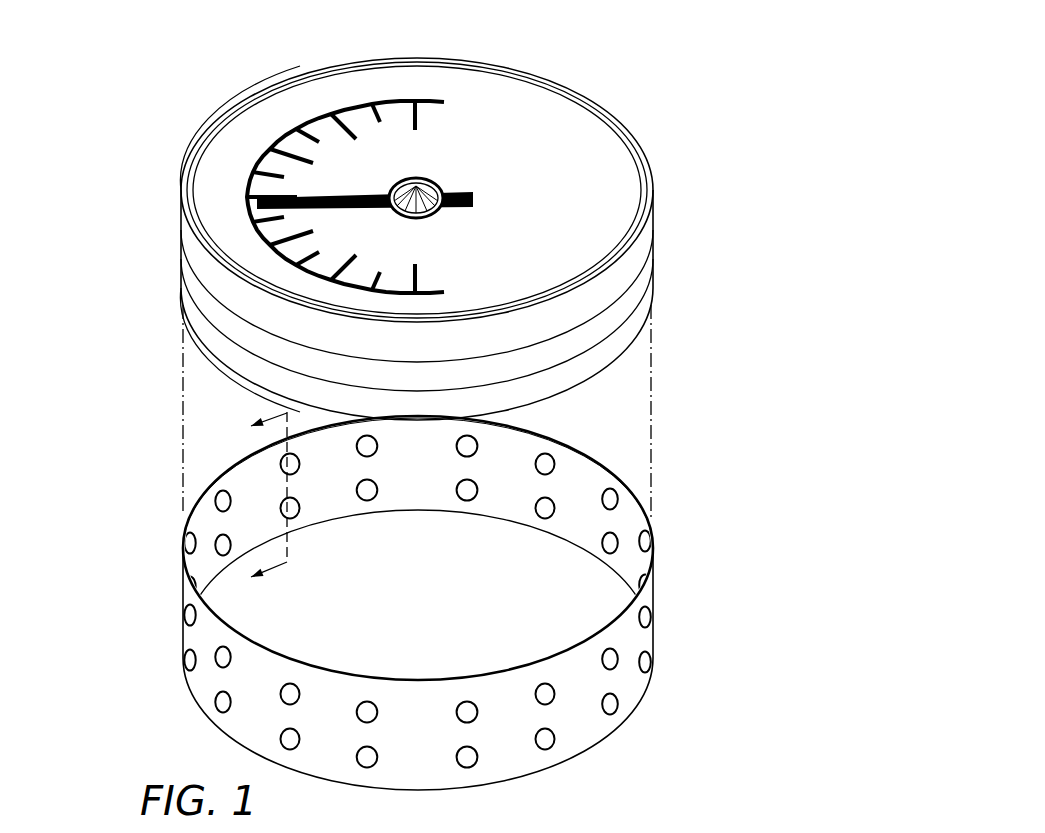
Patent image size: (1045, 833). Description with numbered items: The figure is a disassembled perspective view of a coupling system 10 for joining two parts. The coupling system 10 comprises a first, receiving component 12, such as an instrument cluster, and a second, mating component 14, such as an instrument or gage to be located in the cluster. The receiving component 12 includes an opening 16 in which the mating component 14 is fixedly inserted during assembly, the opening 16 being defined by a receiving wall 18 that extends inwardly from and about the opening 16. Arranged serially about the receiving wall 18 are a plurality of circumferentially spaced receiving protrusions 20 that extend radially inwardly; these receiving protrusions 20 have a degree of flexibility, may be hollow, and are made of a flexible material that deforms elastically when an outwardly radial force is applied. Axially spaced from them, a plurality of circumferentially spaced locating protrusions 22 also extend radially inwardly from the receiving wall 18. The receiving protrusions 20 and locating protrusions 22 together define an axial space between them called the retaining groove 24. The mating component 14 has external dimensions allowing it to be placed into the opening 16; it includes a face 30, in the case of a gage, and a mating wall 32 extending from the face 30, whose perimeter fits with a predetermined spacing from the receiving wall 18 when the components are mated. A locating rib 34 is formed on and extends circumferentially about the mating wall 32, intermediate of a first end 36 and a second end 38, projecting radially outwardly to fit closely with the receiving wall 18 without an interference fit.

The coupling system 10 is at (163, 493).
The receiving component 12 is at (464, 586).
The mating component 14 is at (422, 228).
The opening 16 is at (507, 479).
The receiving wall 18 is at (635, 527).
The receiving protrusions 20 is at (545, 463).
The locating protrusions 22 is at (545, 508).
The retaining groove 24 is at (362, 468).
The face 30 is at (557, 128).
The mating wall 32 is at (643, 235).
The locating rib 34 is at (655, 257).
The first end 36 is at (183, 193).
The second end 38 is at (182, 293).